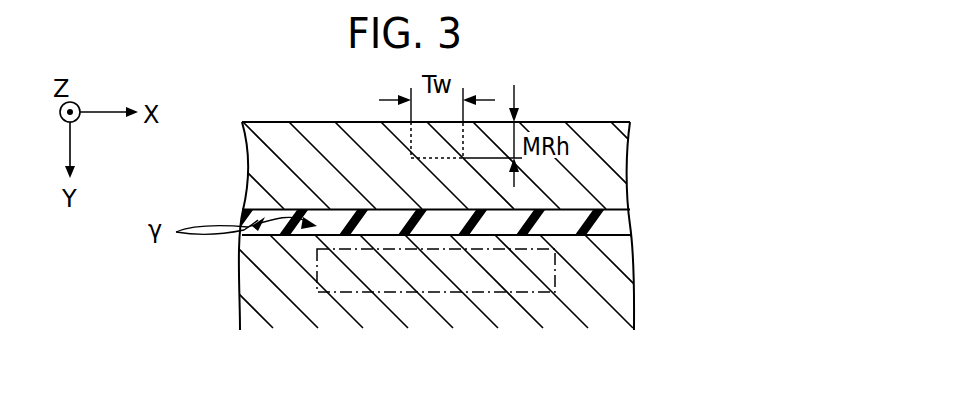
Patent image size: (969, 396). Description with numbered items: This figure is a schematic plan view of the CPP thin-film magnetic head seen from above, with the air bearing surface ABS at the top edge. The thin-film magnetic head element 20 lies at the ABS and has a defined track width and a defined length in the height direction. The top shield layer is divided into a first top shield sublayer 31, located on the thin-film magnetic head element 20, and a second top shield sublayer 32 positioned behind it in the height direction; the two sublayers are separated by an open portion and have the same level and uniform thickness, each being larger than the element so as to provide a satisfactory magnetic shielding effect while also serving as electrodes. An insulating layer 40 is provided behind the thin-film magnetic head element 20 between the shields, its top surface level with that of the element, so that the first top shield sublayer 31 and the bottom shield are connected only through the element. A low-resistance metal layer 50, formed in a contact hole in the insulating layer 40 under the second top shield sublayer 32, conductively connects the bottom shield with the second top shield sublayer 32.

The thin-film magnetic head element 20 is at (410, 143).
The first top shield sublayer 31 is at (620, 177).
The second top shield sublayer 32 is at (620, 290).
The insulating layer 40 is at (620, 225).
The low-resistance metal layer 50 is at (318, 272).
The air bearing surface ABS is at (598, 119).